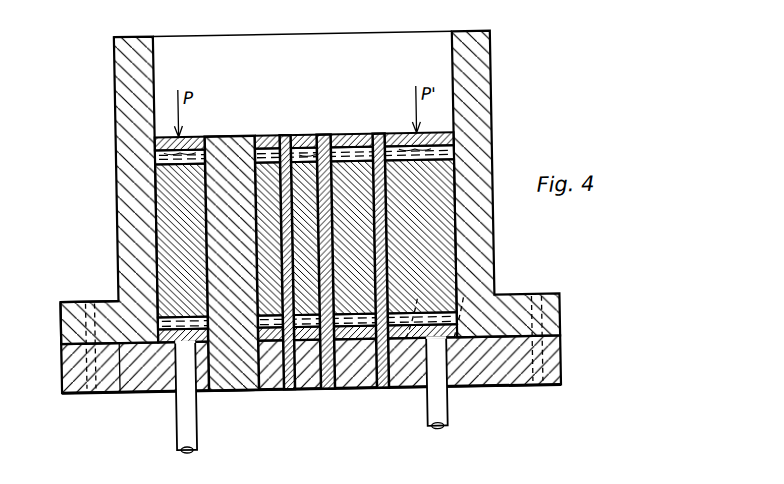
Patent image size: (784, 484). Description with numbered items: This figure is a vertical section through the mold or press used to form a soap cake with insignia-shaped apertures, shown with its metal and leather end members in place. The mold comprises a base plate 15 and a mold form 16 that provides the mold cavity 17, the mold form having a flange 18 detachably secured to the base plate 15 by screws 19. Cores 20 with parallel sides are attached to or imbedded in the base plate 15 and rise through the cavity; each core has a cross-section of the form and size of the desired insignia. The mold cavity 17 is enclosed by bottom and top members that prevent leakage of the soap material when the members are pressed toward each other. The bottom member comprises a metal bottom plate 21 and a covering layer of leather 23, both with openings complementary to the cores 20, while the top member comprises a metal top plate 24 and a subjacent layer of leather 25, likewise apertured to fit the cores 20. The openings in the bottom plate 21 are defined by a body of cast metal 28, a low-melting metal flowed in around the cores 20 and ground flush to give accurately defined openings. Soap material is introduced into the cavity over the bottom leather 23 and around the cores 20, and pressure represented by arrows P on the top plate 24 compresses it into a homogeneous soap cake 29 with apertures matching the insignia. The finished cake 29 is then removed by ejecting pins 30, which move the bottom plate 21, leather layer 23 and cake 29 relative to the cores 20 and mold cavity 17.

The base plate 15 is at (153, 380).
The mold form 16 is at (478, 68).
The mold cavity 17 is at (160, 212).
The flange 18 is at (66, 307).
The screws 19 is at (64, 356).
The cores 20 is at (378, 137).
The metal bottom plate 21 is at (418, 336).
The covering layer of leather 23 is at (455, 333).
The metal top plate 24 is at (448, 144).
The subjacent layer of leather 25 is at (450, 156).
The body of cast metal 28 is at (348, 136).
The soap cake 29 is at (438, 247).
The ejecting pins 30 is at (196, 428).